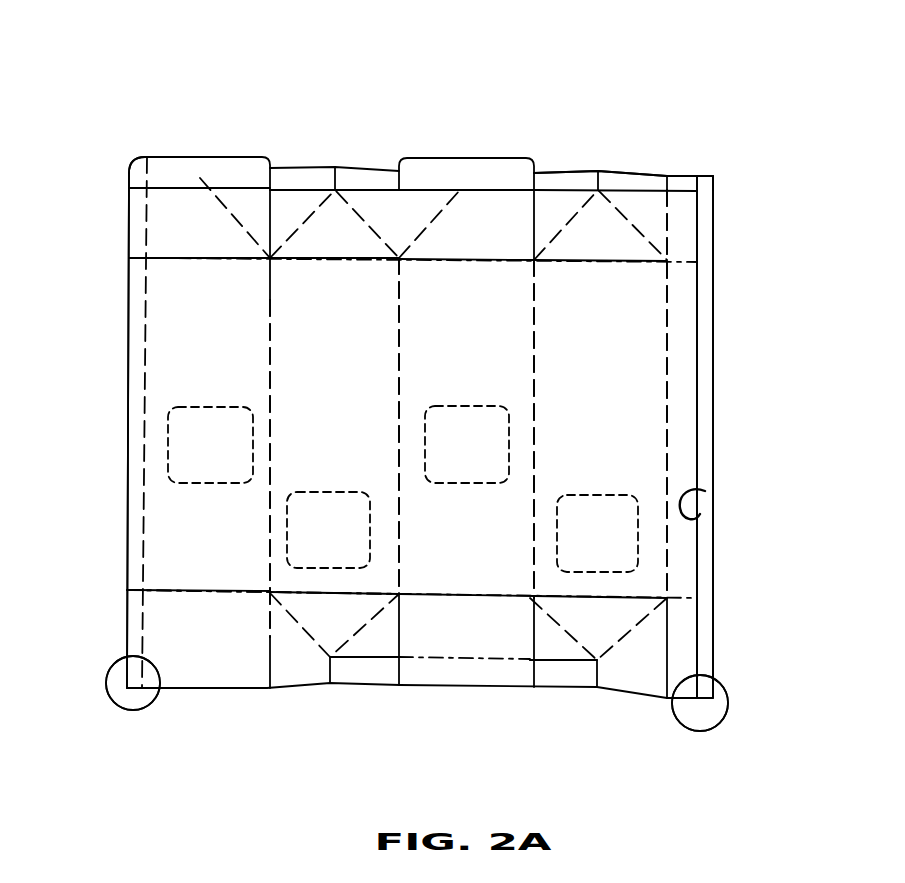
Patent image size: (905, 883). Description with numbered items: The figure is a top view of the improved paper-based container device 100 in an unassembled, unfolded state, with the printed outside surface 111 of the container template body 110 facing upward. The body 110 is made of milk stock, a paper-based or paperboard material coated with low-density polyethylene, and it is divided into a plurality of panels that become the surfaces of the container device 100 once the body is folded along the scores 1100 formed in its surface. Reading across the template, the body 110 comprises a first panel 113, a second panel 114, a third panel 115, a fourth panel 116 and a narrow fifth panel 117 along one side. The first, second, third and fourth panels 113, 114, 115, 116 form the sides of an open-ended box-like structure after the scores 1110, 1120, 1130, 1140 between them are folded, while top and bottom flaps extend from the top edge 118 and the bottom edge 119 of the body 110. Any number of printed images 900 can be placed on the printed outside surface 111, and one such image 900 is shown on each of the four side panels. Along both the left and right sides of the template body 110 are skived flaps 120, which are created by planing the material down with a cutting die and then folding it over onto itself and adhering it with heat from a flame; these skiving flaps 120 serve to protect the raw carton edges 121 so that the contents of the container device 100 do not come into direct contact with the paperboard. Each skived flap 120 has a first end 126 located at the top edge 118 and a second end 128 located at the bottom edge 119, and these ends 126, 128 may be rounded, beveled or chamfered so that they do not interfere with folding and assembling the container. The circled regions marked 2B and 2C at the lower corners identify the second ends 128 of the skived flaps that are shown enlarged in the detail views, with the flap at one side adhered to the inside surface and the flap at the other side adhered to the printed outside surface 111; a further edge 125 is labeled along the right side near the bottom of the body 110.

The container device 100 is at (416, 692).
The container template body 110 is at (476, 150).
The printed outside surface 111 is at (420, 638).
The first panel 113 is at (188, 373).
The second panel 114 is at (310, 376).
The third panel 115 is at (435, 371).
The fourth panel 116 is at (583, 374).
The fifth panel 117 is at (683, 373).
The top edge 118 is at (560, 172).
The bottom edge 119 is at (580, 688).
The skived flap 120 is at (135, 340).
The raw carton edge 121 is at (705, 491).
The edge 125 is at (697, 652).
The first end 126 is at (141, 138).
The second end 128 is at (133, 705).
The printed image 900 is at (188, 454).
The score 1100 is at (437, 217).
The score 1110 is at (668, 290).
The score 1120 is at (563, 287).
The score 1130 is at (398, 290).
The score 1140 is at (270, 287).
The detail view 2B is at (108, 675).
The detail view 2C is at (727, 690).